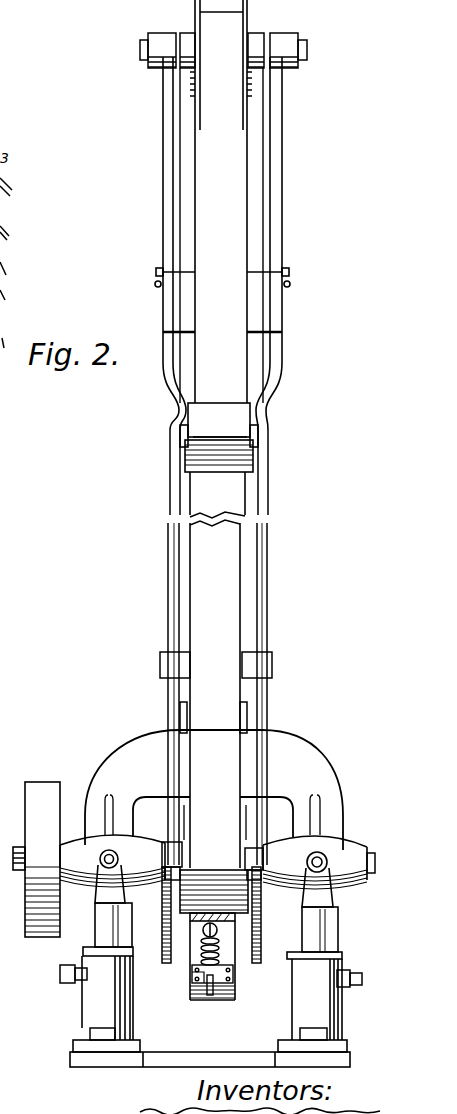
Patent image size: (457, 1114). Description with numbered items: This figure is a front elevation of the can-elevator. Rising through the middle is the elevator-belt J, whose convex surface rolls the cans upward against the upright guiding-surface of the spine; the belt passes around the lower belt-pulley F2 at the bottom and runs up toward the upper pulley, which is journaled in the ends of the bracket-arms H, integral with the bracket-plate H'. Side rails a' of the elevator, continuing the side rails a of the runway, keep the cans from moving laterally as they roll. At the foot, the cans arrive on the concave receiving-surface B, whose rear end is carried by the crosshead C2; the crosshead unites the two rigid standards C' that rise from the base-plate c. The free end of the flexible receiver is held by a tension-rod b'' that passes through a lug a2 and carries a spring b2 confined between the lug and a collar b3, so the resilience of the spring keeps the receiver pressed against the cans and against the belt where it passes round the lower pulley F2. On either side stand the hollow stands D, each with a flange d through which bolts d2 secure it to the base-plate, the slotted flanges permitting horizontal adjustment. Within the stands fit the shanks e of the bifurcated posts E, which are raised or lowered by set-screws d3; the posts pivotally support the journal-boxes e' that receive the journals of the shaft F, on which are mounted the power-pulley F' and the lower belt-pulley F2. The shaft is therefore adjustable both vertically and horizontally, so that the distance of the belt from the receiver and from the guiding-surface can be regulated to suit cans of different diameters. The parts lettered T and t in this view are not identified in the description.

The elevator-belt J is at (216, 456).
The side rails a is at (222, 458).
The side rails a' is at (215, 484).
The lug a2 is at (197, 972).
The curved rod frame T is at (233, 243).
The bracket-arms H is at (220, 235).
The bracket-plate H' is at (236, 300).
The block t is at (219, 437).
The crosshead C2 is at (214, 790).
The rigid standards C' is at (211, 864).
The lower belt-pulley F2 is at (184, 826).
The power-pulley F' is at (36, 859).
The shaft F is at (377, 864).
The journal-boxes e' is at (213, 862).
The bifurcated posts E is at (214, 878).
The shanks e is at (216, 927).
The hollow stands D is at (82, 1010).
The set-screws d3 is at (62, 970).
The bolts d2 is at (90, 1034).
The flanges d is at (219, 1039).
The base-plate c is at (14, 859).
The concave can-receiver B is at (222, 1001).
The collar b3 is at (225, 945).
The spring b2 is at (222, 962).
The tension-rod b'' is at (193, 1006).